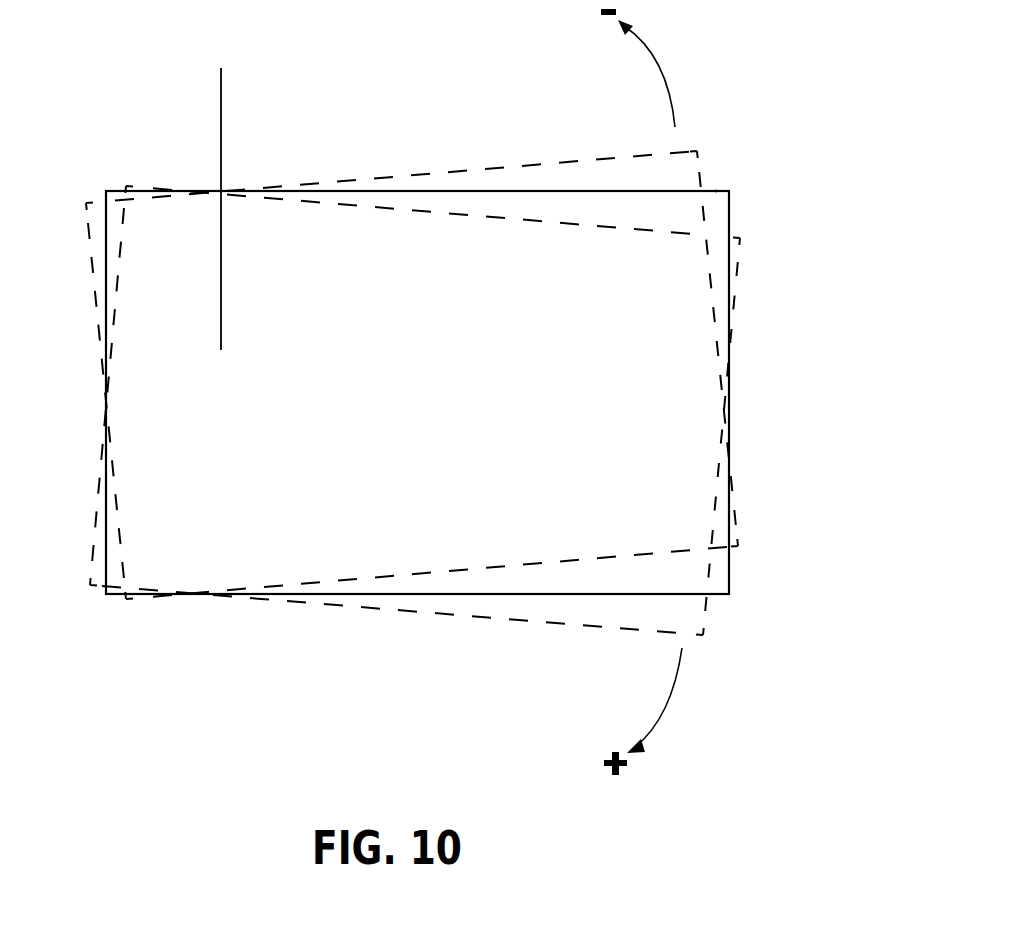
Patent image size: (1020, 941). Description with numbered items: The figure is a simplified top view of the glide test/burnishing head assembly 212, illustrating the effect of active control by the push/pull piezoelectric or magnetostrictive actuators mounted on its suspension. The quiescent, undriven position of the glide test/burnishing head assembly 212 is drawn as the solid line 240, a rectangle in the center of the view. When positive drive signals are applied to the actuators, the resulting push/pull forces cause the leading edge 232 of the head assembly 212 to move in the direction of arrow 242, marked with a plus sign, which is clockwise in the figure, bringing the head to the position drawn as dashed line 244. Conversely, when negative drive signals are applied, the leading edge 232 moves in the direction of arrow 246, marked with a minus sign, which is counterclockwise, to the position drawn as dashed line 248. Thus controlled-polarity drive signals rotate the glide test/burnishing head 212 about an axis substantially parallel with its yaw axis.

The glide test/burnishing head assembly 212 is at (220, 189).
The leading edge 232 is at (730, 221).
The solid line 240 is at (716, 190).
The arrow 242 is at (667, 702).
The dashed line 244 is at (556, 623).
The arrow 246 is at (652, 57).
The dashed line 248 is at (570, 160).